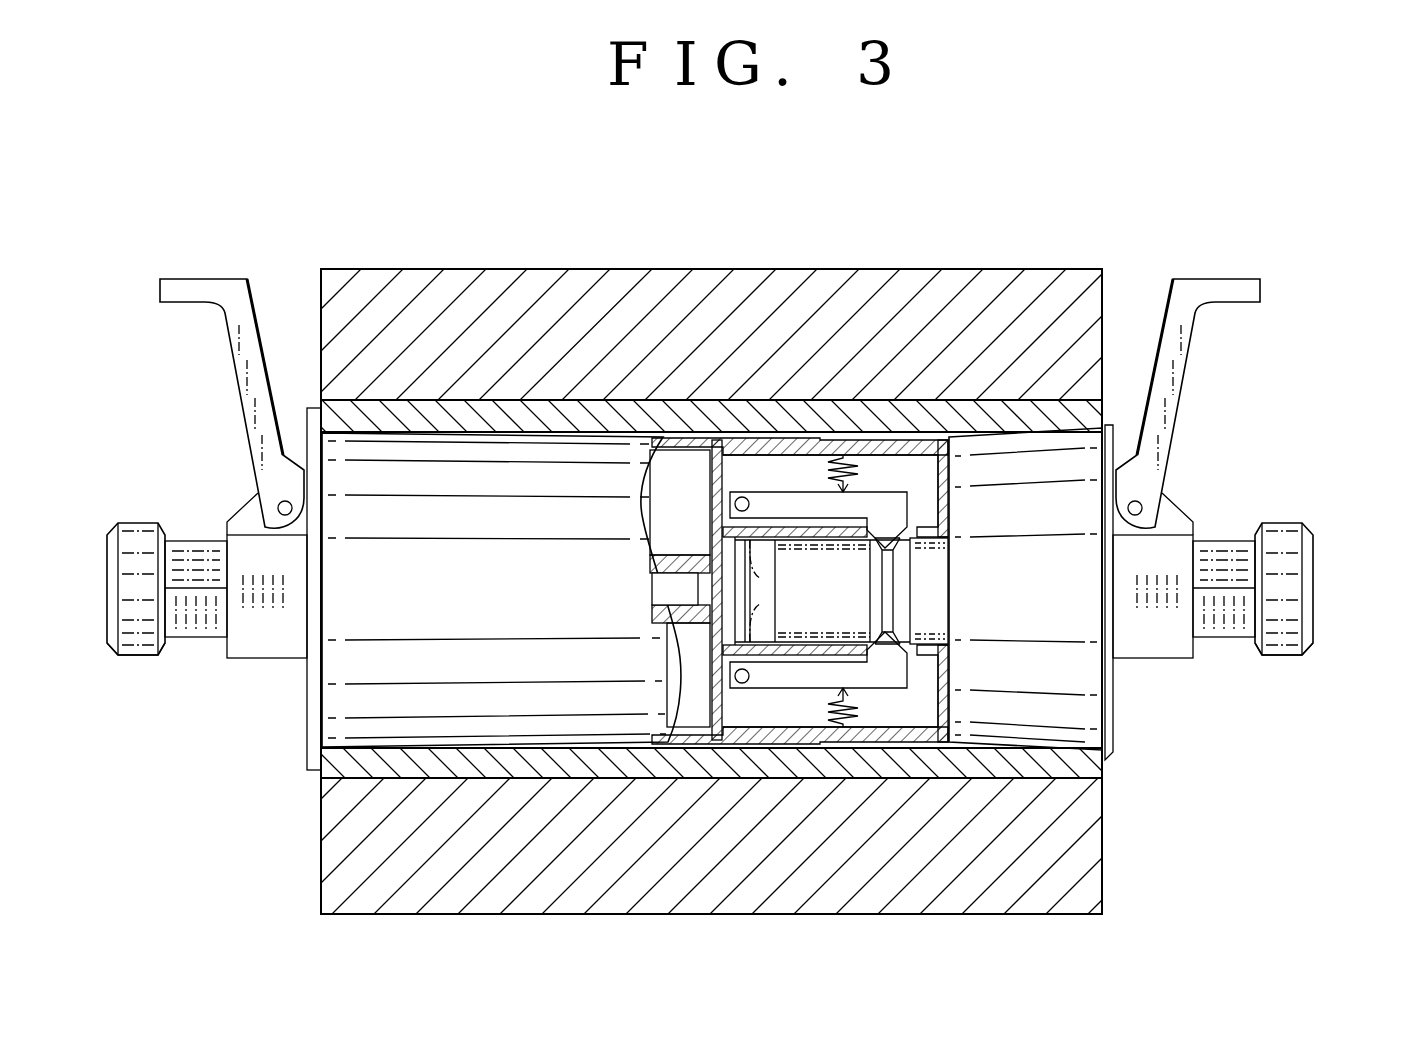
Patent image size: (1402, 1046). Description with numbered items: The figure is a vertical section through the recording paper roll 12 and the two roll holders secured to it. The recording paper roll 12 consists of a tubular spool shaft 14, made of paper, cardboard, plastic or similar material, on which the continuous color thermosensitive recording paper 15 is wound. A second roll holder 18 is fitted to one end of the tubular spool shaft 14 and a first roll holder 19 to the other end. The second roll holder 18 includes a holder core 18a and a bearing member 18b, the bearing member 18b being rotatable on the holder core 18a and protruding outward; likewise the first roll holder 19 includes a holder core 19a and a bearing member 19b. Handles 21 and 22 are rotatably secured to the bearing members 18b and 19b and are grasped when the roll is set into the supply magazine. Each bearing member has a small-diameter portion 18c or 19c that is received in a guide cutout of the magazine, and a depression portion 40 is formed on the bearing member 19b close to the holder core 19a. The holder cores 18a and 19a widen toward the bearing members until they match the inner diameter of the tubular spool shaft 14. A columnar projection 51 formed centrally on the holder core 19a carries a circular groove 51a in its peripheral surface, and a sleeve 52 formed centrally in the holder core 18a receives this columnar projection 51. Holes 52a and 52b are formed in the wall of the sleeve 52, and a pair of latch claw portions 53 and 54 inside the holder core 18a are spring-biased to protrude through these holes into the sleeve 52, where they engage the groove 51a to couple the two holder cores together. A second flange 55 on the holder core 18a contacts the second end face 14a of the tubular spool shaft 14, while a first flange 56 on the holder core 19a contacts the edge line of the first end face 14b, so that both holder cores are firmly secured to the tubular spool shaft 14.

The recording paper roll 12 is at (831, 268).
The tubular spool shaft 14 is at (620, 399).
The second end face 14a is at (321, 772).
The first end face 14b is at (1105, 770).
The color thermosensitive recording paper 15 is at (700, 285).
The second roll holder 18 is at (139, 521).
The holder core 18a is at (460, 497).
The bearing member 18b is at (140, 656).
The small-diameter portion 18c is at (195, 541).
The first roll holder 19 is at (1318, 546).
The holder core 19a is at (1043, 505).
The bearing member 19b is at (1282, 656).
The small-diameter portion 19c is at (1233, 541).
The handle 21 is at (193, 279).
The handle 22 is at (1218, 279).
The depression portion 40 is at (1164, 661).
The columnar projection 51 is at (862, 583).
The groove 51a is at (905, 568).
The sleeve 52 is at (755, 572).
The hole 52a is at (880, 548).
The hole 52b is at (878, 630).
The latch claw portion 53 is at (888, 528).
The latch claw portion 54 is at (888, 652).
The second flange 55 is at (307, 705).
The first flange 56 is at (1107, 728).